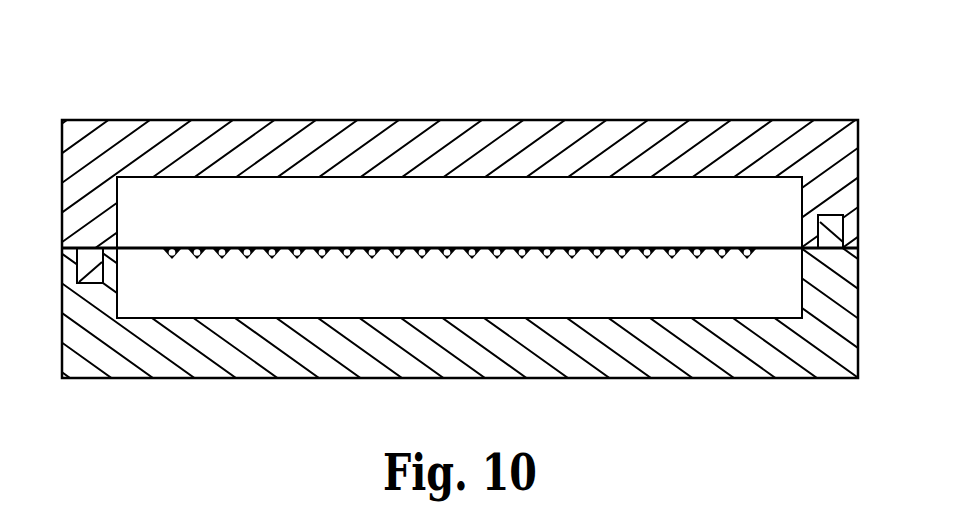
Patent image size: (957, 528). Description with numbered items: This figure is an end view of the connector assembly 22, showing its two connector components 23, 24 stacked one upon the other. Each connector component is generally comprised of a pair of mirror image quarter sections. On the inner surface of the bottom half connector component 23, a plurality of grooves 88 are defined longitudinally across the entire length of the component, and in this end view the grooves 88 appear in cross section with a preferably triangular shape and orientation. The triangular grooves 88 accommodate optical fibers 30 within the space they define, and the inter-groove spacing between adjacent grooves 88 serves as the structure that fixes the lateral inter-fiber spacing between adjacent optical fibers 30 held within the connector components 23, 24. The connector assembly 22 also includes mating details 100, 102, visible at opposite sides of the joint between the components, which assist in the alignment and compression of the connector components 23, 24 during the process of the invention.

The connector assembly 22 is at (614, 60).
The connector component 23 is at (715, 372).
The connector component 24 is at (712, 127).
The optical fibers 30 is at (424, 238).
The grooves 88 is at (523, 260).
The mating detail 100 is at (829, 222).
The mating detail 102 is at (89, 286).